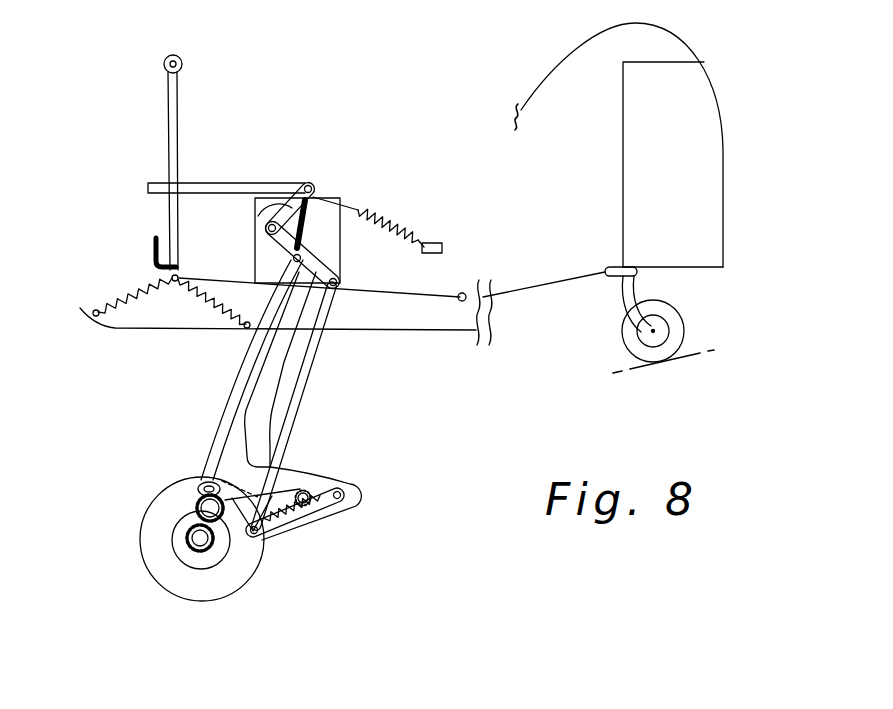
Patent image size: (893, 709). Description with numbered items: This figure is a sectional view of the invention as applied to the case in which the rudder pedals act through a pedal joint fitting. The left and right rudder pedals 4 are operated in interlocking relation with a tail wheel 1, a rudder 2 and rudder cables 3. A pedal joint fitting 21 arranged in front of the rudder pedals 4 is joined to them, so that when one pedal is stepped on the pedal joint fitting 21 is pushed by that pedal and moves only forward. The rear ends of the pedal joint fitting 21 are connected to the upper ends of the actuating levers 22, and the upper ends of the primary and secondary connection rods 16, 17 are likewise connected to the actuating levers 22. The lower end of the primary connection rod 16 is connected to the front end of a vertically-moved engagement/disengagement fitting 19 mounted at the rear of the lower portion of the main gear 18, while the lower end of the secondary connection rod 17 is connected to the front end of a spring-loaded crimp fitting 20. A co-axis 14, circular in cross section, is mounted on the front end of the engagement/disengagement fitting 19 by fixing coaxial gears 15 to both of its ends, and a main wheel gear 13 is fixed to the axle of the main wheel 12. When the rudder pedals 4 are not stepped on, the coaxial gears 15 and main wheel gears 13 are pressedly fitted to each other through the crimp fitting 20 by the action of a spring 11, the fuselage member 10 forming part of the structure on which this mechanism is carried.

The tail wheel 1 is at (676, 333).
The rudder 2 is at (693, 182).
The rudder cables 3 is at (547, 287).
The rudder pedal 4 is at (157, 238).
The fuselage member 10 is at (322, 293).
The spring 11 is at (121, 297).
The main wheel 12 is at (225, 585).
The main wheel gear 13 is at (230, 543).
The co-axis 14 is at (265, 553).
The coaxial gear 15 is at (197, 500).
The primary connection rod 16 is at (263, 342).
The secondary connection rod 17 is at (300, 392).
The main gear 18 is at (248, 420).
The engagement/disengagement fitting 19 is at (353, 484).
The spring-loaded crimp fitting 20 is at (305, 522).
The pedal joint fitting 21 is at (244, 184).
The actuating lever 22 is at (318, 202).